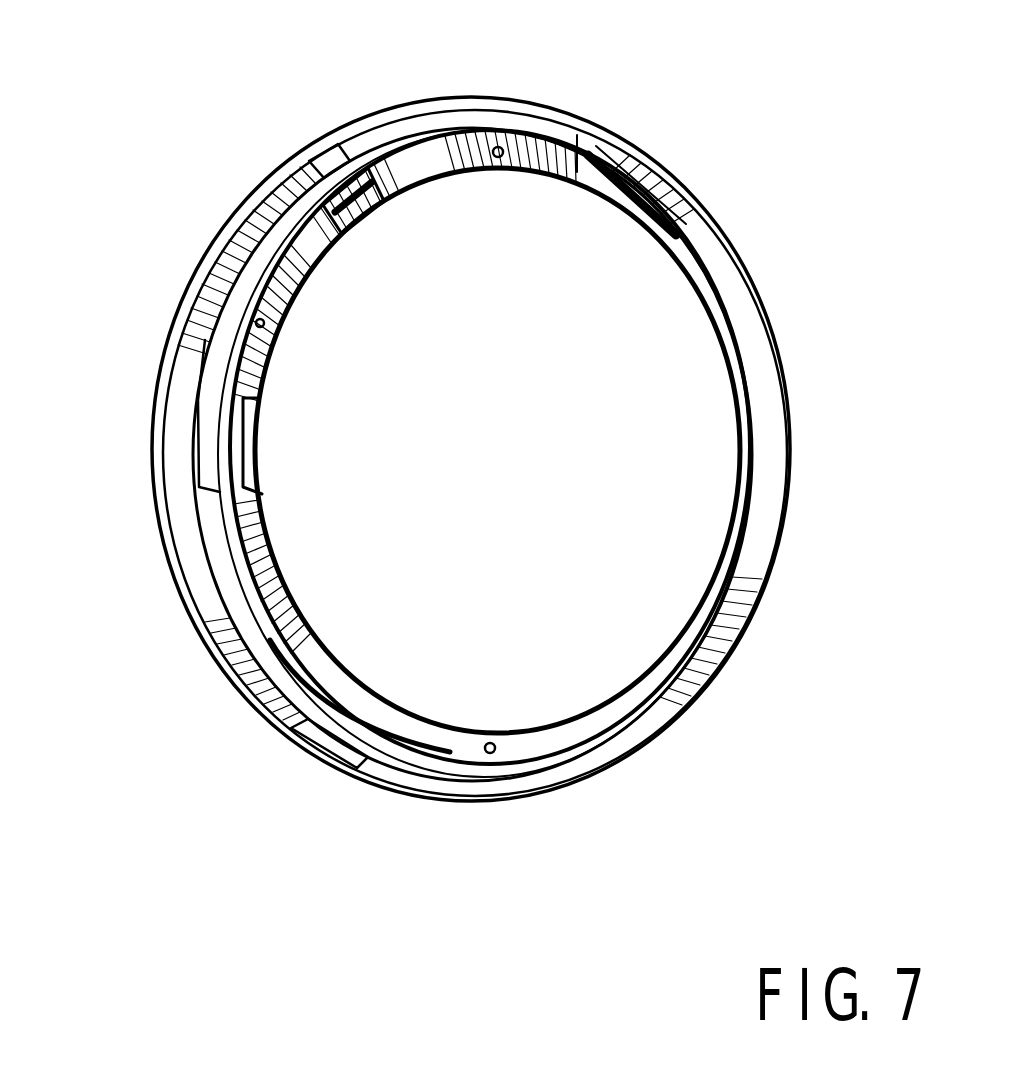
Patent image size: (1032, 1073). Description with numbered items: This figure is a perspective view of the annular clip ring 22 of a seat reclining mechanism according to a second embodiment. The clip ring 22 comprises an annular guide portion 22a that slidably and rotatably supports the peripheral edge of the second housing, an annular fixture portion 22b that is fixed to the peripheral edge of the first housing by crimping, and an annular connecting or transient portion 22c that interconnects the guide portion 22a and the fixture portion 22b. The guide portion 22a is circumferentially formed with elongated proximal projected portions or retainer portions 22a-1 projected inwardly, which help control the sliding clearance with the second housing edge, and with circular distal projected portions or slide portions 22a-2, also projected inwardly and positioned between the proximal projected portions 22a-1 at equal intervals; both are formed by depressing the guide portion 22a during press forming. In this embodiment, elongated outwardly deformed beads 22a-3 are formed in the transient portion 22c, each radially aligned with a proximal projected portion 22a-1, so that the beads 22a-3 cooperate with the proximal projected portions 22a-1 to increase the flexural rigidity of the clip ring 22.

The clip ring 22 is at (650, 149).
The guide portion 22a is at (405, 160).
The proximal projected portion 22a-1 is at (345, 195).
The distal projected portion 22a-2 is at (268, 323).
The bead 22a-3 is at (297, 154).
The fixture portion 22b is at (762, 333).
The transient portion 22c is at (223, 210).